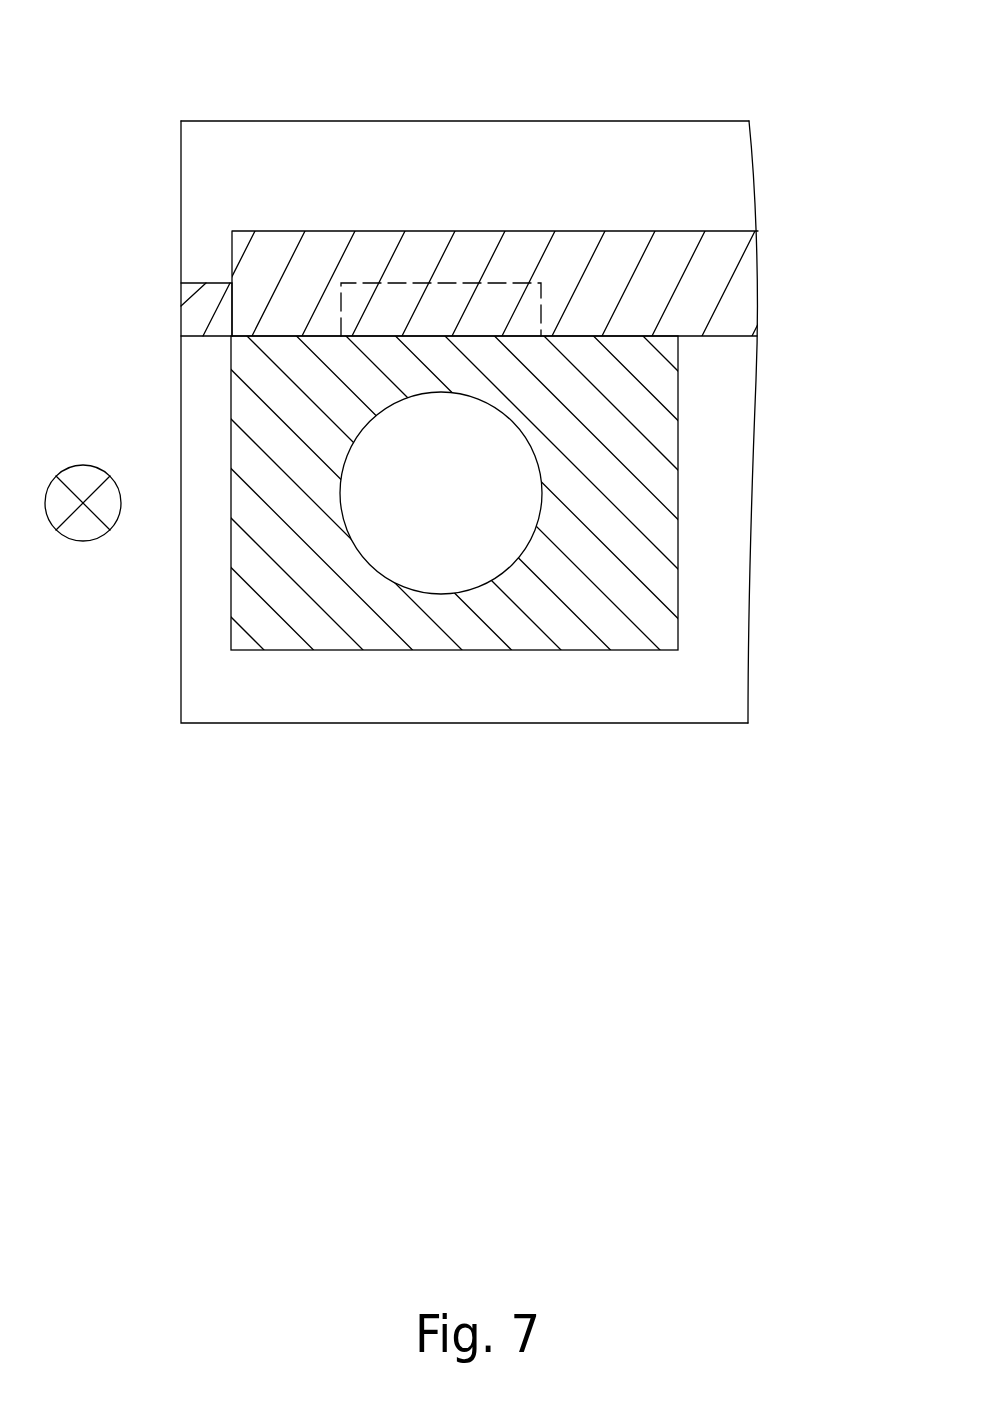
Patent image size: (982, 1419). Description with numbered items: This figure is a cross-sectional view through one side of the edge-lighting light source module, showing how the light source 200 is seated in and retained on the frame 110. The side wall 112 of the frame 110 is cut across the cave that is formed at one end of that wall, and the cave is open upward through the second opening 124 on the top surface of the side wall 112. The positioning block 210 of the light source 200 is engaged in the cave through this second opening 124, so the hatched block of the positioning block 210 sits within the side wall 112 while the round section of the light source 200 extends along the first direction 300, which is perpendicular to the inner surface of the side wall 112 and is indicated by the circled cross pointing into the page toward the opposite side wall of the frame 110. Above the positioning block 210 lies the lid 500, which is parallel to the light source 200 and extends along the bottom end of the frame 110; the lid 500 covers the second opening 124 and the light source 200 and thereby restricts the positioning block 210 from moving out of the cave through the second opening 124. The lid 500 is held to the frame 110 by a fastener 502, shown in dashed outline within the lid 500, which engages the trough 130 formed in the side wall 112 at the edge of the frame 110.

The frame 110 is at (195, 363).
The side wall 112 is at (546, 121).
The second opening 124 is at (660, 338).
The trough 130 is at (195, 284).
The light source 200 is at (500, 495).
The positioning block 210 is at (648, 413).
The first direction 300 is at (83, 527).
The lid 500 is at (600, 243).
The fastener 502 is at (205, 300).